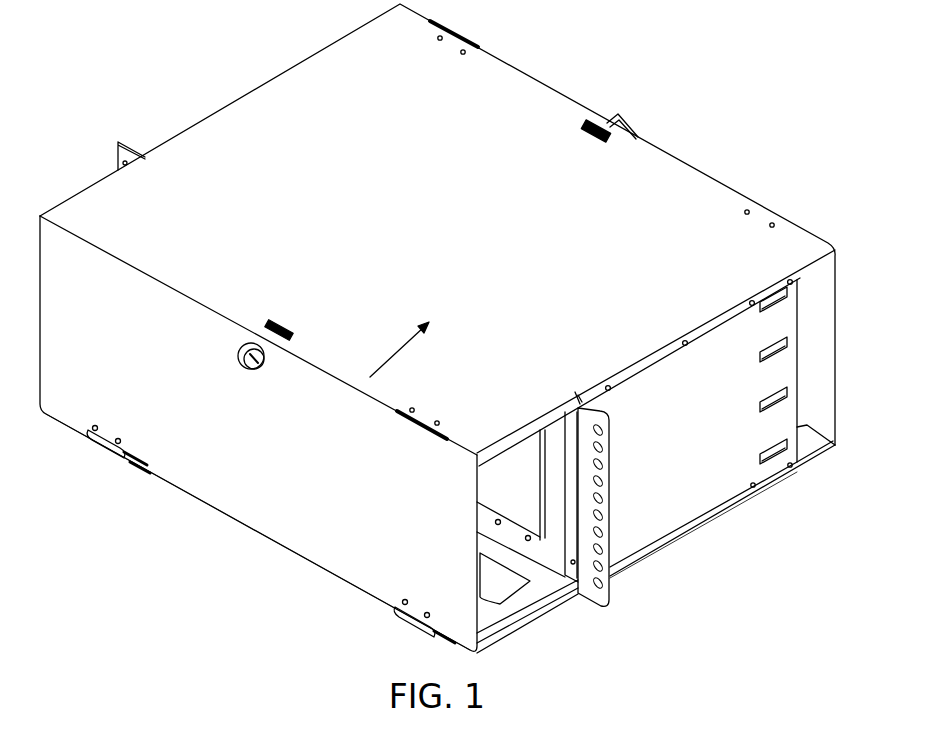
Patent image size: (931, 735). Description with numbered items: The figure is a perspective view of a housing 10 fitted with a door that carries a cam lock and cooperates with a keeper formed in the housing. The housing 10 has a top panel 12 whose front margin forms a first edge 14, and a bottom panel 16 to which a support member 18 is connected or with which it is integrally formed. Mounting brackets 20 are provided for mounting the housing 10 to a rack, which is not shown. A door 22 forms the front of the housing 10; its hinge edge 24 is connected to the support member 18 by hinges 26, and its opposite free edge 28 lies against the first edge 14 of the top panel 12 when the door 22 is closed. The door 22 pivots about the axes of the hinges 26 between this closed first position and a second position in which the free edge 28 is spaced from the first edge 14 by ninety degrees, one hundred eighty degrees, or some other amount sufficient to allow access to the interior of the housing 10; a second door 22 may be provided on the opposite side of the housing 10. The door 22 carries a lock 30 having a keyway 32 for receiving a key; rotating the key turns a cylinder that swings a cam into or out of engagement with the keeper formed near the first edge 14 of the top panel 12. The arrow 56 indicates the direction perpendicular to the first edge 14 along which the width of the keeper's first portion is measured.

The housing 10 is at (204, 81).
The top panel 12 is at (290, 76).
The first edge 14 is at (203, 304).
The bottom panel 16 is at (647, 549).
The support member 18 is at (517, 626).
The mounting brackets 20 is at (136, 144).
The door 22 is at (706, 176).
The hinge edge 24 is at (241, 532).
The hinges 26 is at (101, 453).
The free edge 28 is at (327, 384).
The lock 30 is at (227, 354).
The keyway 32 is at (258, 374).
The arrow 56 is at (404, 350).